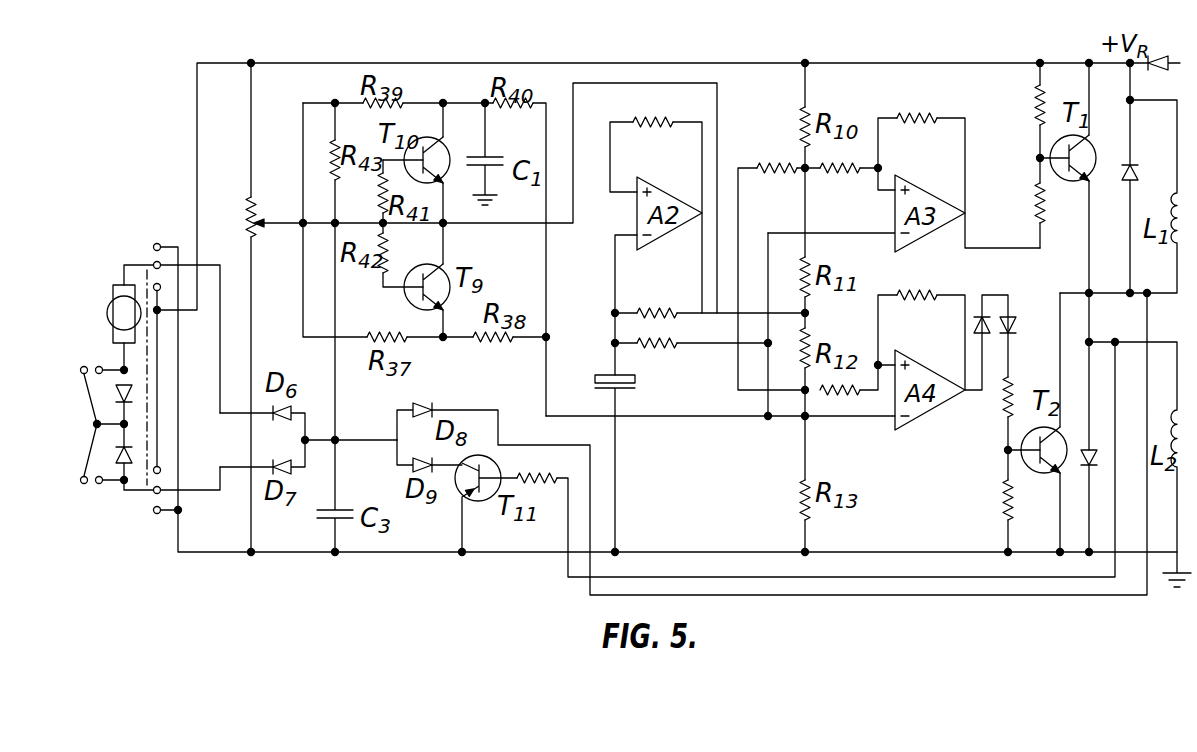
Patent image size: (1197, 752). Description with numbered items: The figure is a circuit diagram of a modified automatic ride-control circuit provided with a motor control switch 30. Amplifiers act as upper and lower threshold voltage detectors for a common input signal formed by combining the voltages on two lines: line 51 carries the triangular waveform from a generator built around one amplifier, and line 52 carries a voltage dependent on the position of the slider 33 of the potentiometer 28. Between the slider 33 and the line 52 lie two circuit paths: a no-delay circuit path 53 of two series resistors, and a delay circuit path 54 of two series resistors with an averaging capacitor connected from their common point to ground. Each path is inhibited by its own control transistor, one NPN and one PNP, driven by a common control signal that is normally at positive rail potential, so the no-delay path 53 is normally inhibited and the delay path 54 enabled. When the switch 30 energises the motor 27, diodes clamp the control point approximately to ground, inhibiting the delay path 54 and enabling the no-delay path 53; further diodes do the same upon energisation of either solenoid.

The motor 27 is at (116, 313).
The potentiometer 28 is at (265, 211).
The motor control switch 30 is at (145, 258).
The slider 33 is at (257, 228).
The line 51 is at (733, 337).
The line 52 is at (730, 415).
The no-delay circuit path 53 is at (448, 344).
The delay circuit path 54 is at (458, 82).